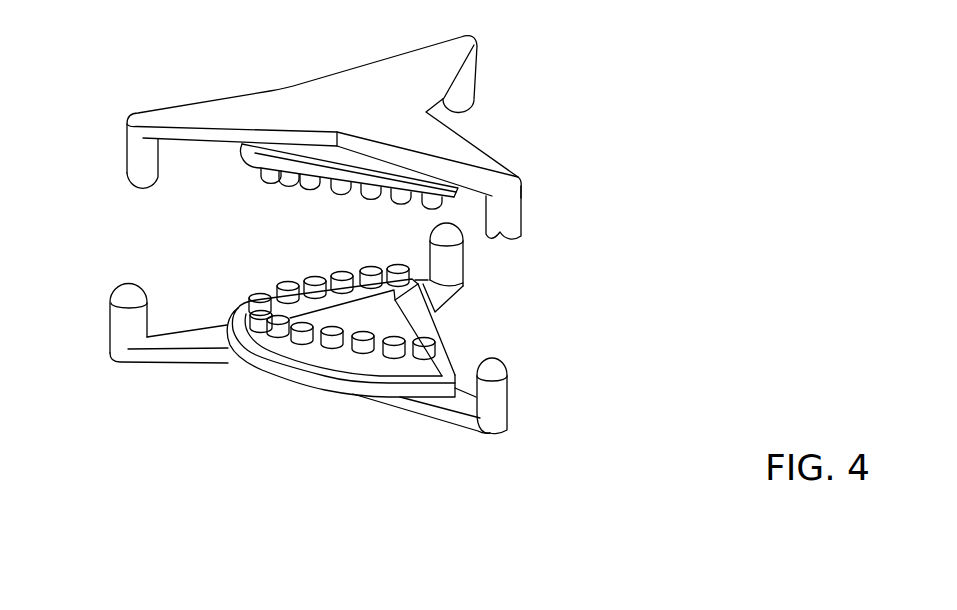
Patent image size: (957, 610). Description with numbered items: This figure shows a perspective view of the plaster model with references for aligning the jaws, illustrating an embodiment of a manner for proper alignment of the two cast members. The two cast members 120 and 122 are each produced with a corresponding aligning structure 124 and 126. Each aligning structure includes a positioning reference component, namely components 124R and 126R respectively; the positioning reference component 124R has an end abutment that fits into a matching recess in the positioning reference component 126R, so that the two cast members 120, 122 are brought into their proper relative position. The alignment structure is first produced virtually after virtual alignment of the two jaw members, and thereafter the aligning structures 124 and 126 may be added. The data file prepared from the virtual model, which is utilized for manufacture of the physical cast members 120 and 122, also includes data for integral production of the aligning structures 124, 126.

The cast member 120 is at (313, 163).
The cast member 122 is at (234, 318).
The aligning structure 124 is at (210, 363).
The positioning reference component 124R is at (497, 367).
The aligning structure 126 is at (237, 113).
The positioning reference component 126R is at (506, 238).